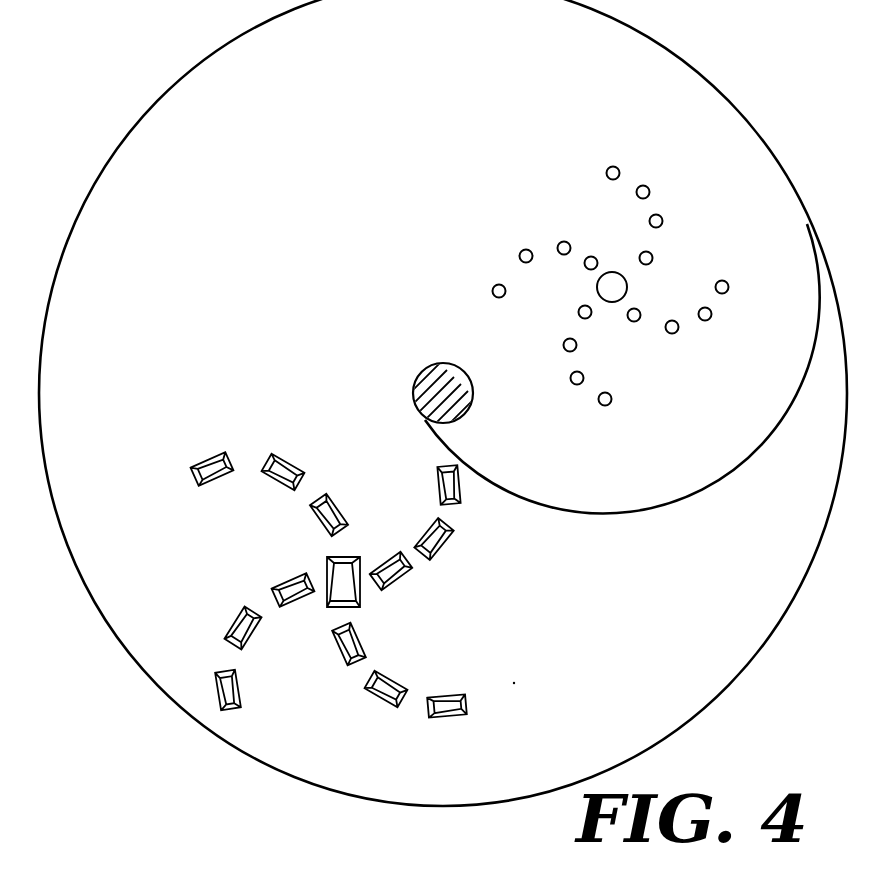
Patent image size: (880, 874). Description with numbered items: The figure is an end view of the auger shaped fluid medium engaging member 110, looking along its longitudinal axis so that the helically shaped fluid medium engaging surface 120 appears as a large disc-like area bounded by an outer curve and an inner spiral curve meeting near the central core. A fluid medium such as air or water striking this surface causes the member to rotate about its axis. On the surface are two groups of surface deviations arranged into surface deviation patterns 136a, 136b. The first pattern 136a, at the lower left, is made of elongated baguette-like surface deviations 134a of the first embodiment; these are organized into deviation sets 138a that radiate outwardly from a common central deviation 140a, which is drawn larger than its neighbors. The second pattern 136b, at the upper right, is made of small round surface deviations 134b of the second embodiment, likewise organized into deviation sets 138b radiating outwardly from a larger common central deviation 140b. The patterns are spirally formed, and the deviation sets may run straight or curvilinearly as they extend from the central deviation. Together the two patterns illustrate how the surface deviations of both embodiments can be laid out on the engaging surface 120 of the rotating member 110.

The fluid medium engaging member 110 is at (103, 149).
The fluid medium engaging surface 120 is at (226, 239).
The first surface deviation pattern 136a is at (343, 584).
The first deviation set 138a is at (312, 529).
The first common central deviation 140a is at (327, 567).
The first surface deviations 134a is at (452, 506).
The second surface deviation pattern 136b is at (623, 286).
The second deviation set 138b is at (665, 221).
The second common central deviation 140b is at (597, 285).
The second surface deviations 134b is at (666, 328).